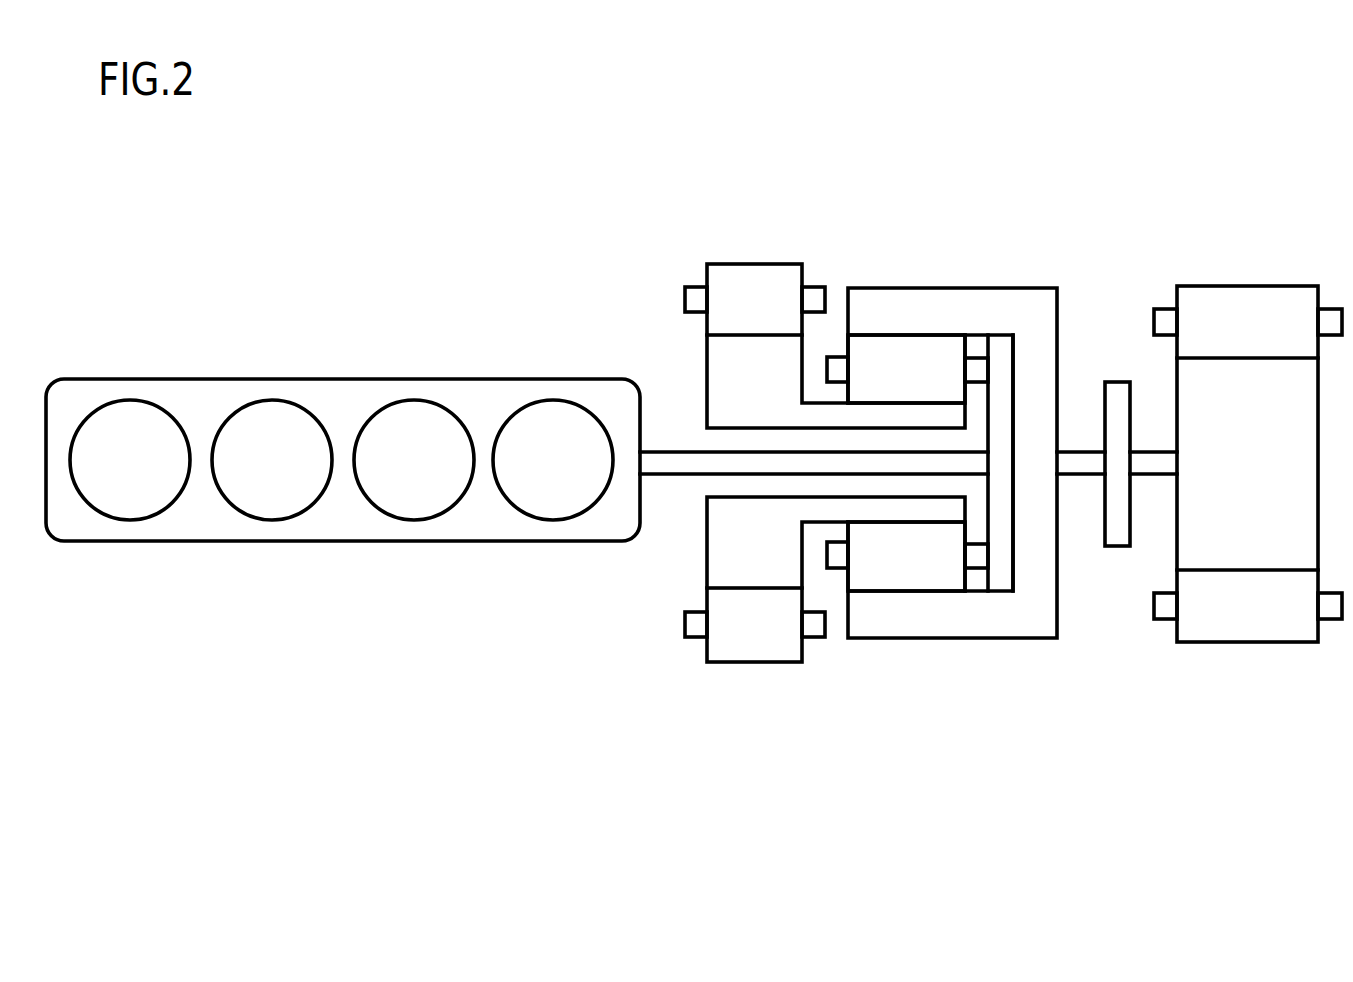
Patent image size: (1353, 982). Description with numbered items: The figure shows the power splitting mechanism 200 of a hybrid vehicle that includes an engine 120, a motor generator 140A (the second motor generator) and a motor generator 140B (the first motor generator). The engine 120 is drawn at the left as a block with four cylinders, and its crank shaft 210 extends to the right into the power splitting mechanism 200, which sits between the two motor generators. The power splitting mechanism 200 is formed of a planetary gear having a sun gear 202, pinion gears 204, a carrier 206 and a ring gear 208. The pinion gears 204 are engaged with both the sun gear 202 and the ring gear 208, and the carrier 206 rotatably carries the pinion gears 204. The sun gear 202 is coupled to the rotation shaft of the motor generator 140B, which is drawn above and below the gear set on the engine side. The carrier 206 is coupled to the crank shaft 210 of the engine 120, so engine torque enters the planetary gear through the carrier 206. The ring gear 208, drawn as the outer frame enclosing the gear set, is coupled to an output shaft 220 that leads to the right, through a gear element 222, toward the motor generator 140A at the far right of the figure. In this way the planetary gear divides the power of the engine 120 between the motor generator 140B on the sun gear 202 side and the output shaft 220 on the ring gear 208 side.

The engine 120 is at (345, 379).
The motor generator 140A is at (1248, 286).
The motor generator 140B is at (757, 264).
The power splitting mechanism 200 is at (948, 252).
The sun gear 202 is at (884, 523).
The pinion gears 204 is at (927, 592).
The carrier 206 is at (987, 499).
The ring gear 208 is at (1012, 640).
The input shaft (crankshaft) 210 is at (673, 478).
The output shaft 220 is at (1083, 478).
The reduction gear / drive gear 222 is at (1117, 548).